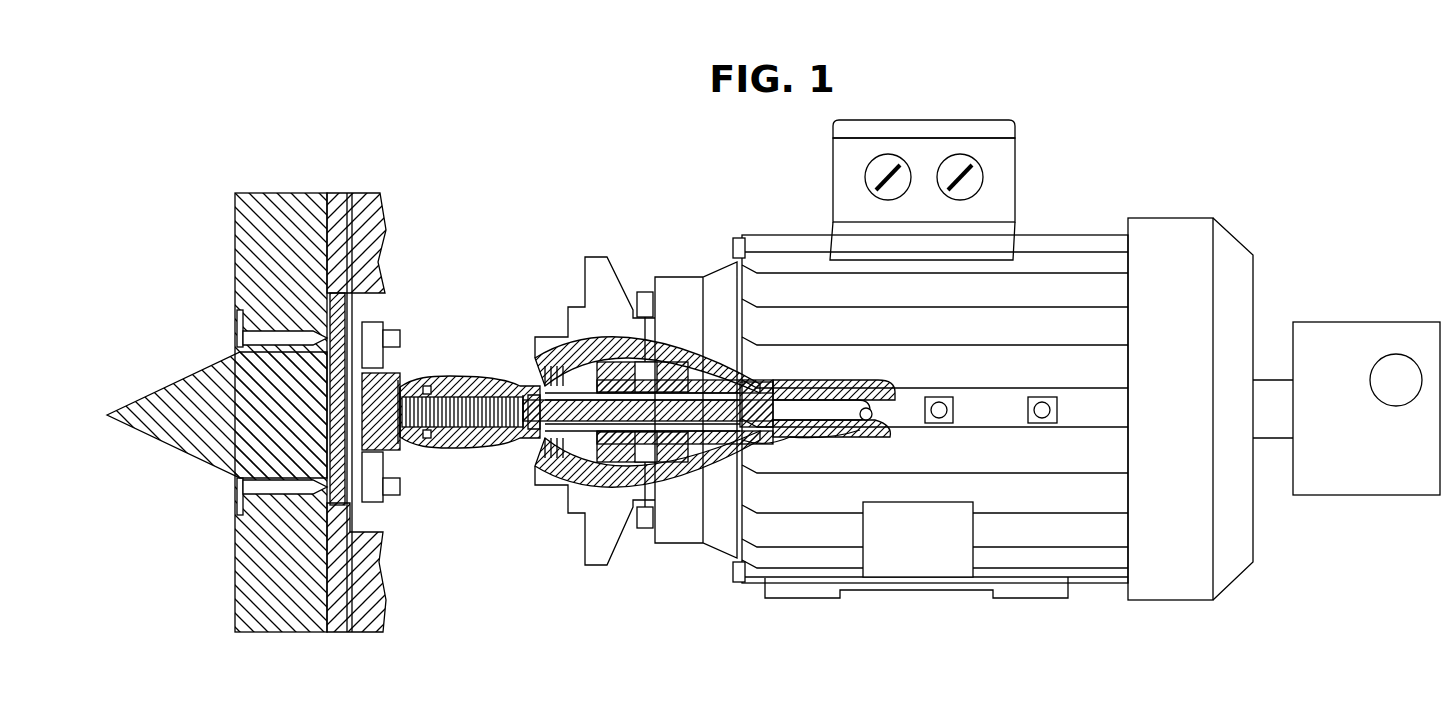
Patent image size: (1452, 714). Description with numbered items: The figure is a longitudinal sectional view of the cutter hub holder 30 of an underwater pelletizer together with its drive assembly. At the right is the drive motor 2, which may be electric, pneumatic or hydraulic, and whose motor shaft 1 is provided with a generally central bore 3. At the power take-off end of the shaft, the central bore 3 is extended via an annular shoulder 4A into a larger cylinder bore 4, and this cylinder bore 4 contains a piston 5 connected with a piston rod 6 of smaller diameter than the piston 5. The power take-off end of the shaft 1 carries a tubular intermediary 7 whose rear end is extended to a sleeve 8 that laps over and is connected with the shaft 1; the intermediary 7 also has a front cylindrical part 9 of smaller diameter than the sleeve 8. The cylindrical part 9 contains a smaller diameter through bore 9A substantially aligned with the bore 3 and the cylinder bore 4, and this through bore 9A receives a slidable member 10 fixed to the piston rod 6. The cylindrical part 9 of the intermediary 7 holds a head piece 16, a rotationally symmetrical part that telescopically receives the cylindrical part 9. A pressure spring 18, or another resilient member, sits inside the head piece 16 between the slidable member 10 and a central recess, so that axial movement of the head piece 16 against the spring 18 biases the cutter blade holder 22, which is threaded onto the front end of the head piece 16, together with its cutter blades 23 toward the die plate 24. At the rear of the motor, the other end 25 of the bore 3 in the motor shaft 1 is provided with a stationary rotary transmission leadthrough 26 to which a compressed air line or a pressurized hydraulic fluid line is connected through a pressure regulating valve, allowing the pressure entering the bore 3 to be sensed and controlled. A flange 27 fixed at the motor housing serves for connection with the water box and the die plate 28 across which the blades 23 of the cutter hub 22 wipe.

The motor shaft 1 is at (827, 437).
The drive motor 2 is at (1067, 258).
The central bore 3 is at (873, 422).
The cylinder bore 4 is at (672, 433).
The annular shoulder 4A is at (785, 437).
The piston 5 is at (740, 403).
The piston rod 6 is at (663, 407).
The tubular intermediary 7 is at (583, 377).
The sleeve 8 is at (618, 363).
The cylindrical part 9 is at (517, 443).
The through bore 9A is at (525, 395).
The slidable member 10 is at (523, 440).
The head piece 16 is at (432, 375).
The pressure spring 18 is at (455, 440).
The cutter blade holder 22 is at (374, 326).
The cutter blades 23 is at (392, 332).
The die plate 24 is at (347, 195).
The other end of the bore 25 is at (1273, 378).
The stationary rotary transmission leadthrough 26 is at (1365, 330).
The flange 27 is at (593, 257).
The die plate 28 is at (282, 200).
The cutter hub holder 30 is at (587, 437).